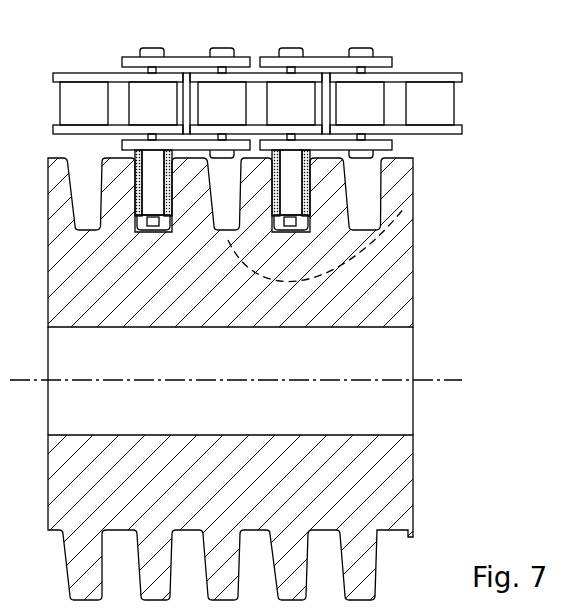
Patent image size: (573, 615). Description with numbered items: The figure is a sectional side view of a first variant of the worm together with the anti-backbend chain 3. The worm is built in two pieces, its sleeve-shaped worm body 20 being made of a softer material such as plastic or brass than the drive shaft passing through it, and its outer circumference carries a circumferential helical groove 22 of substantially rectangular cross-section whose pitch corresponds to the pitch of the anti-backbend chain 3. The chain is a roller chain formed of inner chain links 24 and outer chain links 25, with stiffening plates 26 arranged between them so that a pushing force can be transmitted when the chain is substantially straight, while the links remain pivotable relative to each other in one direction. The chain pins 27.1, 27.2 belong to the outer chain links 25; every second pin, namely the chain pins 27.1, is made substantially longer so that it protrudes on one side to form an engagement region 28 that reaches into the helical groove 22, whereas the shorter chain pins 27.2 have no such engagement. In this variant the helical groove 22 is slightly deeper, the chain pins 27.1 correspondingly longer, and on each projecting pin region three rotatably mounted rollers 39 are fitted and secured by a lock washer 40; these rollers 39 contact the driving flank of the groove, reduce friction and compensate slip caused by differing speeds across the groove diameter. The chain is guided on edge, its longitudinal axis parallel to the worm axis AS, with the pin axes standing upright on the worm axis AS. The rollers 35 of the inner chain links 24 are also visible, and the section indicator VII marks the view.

The anti-backbend chain 3 is at (98, 56).
The worm body 20 is at (373, 587).
The helical groove 22 is at (388, 224).
The inner chain links 24 is at (240, 80).
The outer chain links 25 is at (316, 56).
The stiffening plates 26 is at (166, 70).
The chain pins 27.1 is at (298, 231).
The chain pins 27.2 is at (377, 49).
The engagement region 28 is at (134, 170).
The rollers 35 is at (448, 98).
The rollers 39 is at (135, 158).
The lock washer 40 is at (160, 231).
The section view indicator VII is at (387, 169).
The worm axis AS is at (443, 378).